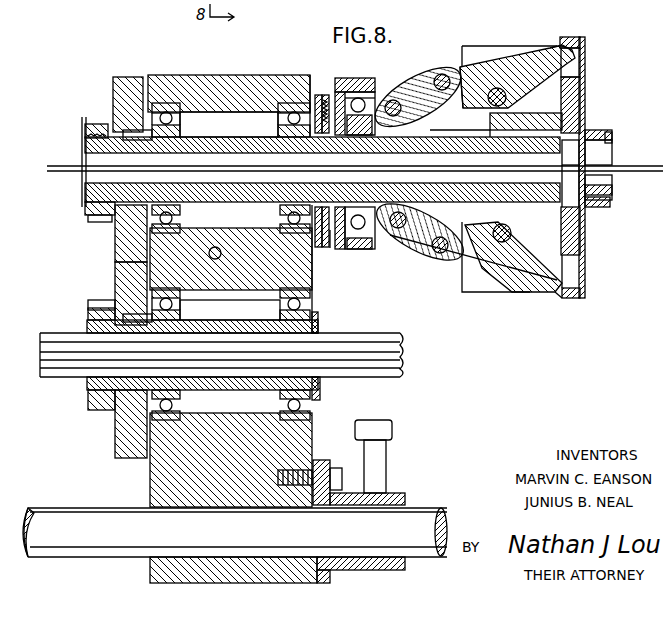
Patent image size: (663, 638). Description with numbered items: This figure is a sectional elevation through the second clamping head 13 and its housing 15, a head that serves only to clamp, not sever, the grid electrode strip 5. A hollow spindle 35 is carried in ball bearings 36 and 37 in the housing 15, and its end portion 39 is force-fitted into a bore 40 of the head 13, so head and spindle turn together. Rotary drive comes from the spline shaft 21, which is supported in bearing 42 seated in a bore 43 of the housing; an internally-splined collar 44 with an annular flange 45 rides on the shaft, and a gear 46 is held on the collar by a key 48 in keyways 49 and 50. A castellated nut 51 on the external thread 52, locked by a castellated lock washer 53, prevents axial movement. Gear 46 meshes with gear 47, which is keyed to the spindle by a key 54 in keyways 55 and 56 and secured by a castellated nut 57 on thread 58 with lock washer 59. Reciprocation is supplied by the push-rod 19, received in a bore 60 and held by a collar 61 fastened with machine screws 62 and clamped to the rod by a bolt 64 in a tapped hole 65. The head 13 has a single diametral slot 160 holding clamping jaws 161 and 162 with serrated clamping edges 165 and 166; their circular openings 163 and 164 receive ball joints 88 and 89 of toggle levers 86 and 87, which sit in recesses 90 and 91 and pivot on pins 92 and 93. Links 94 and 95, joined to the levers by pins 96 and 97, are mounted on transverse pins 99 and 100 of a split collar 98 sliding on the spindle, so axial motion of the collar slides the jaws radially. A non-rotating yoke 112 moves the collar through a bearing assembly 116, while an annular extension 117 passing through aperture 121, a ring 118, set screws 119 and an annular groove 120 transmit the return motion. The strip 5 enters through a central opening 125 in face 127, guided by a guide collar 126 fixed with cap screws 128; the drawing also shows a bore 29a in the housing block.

The grid electrode strip 5 is at (656, 180).
The second clamping head 13 is at (498, 50).
The housing 15 is at (211, 75).
The push-rod 19 is at (68, 515).
The spline shaft 21 is at (40, 357).
The bore 29a is at (221, 256).
The hollow spindle 35 is at (448, 138).
The ball bearing 36 is at (290, 102).
The ball bearing 37 is at (164, 101).
The end portion of hollow spindle 39 is at (487, 144).
The bore 40 is at (490, 128).
The ball bearing 42 is at (167, 297).
The bore 43 is at (231, 269).
The internally-splined collar 44 is at (320, 385).
The annular flange 45 is at (314, 396).
The gear 46 is at (122, 271).
The gear 47 is at (122, 236).
The key 48 is at (138, 318).
The keyway 49 is at (230, 308).
The keyway 50 is at (118, 304).
The castellated nut 51 is at (108, 402).
The external thread 52 is at (100, 322).
The castellated lock washer 53 is at (115, 421).
The key 54 is at (133, 131).
The keyway 55 is at (229, 124).
The keyway 56 is at (88, 128).
The castellated nut 57 is at (90, 206).
The thread 58 is at (90, 135).
The castellated lock washer 59 is at (105, 218).
The bore 60 is at (182, 510).
The collar 61 is at (400, 568).
The machine screw 62 is at (337, 468).
The bolt 64 is at (386, 462).
The tapped hole 65 is at (406, 499).
The toggle lever 86 is at (468, 68).
The toggle lever 87 is at (512, 258).
The ball joint 88 is at (553, 50).
The ball joint 89 is at (555, 290).
The recess 90 is at (530, 52).
The recess 91 is at (521, 280).
The pin 92 is at (506, 101).
The pin 93 is at (497, 242).
The link 94 is at (429, 84).
The link 95 is at (416, 252).
The pin 96 is at (442, 76).
The pin 97 is at (438, 255).
The split collar 98 is at (380, 95).
The transverse pin 99 is at (394, 101).
The transverse pin 100 is at (396, 230).
The yoke 112 is at (352, 78).
The bearing assembly 116 is at (364, 250).
The annular extension 117 is at (360, 132).
The ring 118 is at (319, 248).
The set screw 119 is at (330, 248).
The annular groove 120 is at (318, 135).
The aperture 121 is at (333, 128).
The central opening 125 is at (612, 158).
The guide collar 126 is at (596, 205).
The face 127 is at (590, 122).
The cap screw 128 is at (612, 138).
The diametral slot 160 is at (578, 80).
The clamping jaw 161 is at (585, 100).
The clamping jaw 162 is at (582, 245).
The circular opening 163 is at (582, 52).
The circular opening 164 is at (582, 282).
The serrated clamping edge 165 is at (565, 152).
The serrated clamping edge 166 is at (596, 178).